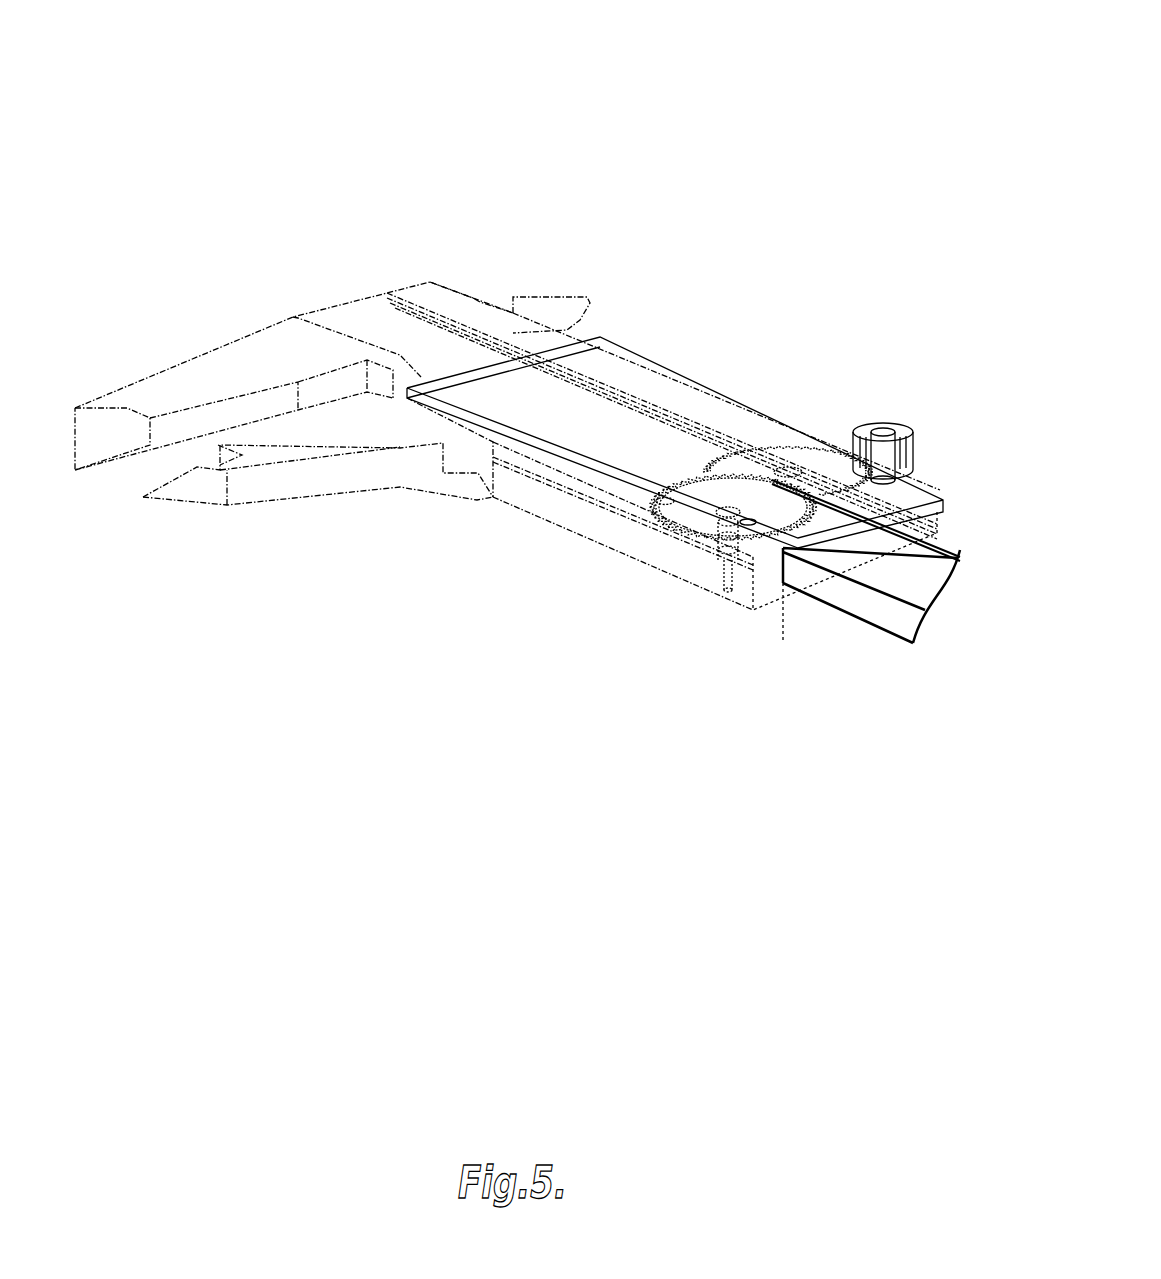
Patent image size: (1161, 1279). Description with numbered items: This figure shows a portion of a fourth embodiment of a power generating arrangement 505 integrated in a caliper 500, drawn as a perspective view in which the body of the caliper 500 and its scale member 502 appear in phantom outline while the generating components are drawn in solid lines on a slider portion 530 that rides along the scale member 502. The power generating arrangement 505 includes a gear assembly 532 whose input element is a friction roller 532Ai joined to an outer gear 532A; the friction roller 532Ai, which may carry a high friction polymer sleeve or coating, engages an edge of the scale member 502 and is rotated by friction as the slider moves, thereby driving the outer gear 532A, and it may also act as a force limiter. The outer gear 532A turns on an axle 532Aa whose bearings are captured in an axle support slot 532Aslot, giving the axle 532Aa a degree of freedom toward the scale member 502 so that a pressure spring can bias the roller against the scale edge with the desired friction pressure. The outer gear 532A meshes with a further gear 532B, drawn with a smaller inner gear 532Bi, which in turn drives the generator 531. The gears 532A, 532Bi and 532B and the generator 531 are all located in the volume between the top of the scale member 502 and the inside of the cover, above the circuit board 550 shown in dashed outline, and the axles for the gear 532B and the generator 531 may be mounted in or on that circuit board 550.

The caliper 500 is at (760, 68).
The scale member 502 is at (347, 306).
The power generating arrangement 505 is at (923, 263).
The slider housing 530 is at (535, 502).
The generator 531 is at (887, 425).
The gear train 532 is at (872, 340).
The outer gear 532A is at (703, 490).
The friction roller 532Ai is at (665, 500).
The axle 532Aa is at (720, 578).
The axle support slot 532Aslot is at (750, 527).
The gear 532B is at (827, 467).
The gear 532Bi is at (787, 478).
The circuit board 550 is at (503, 370).